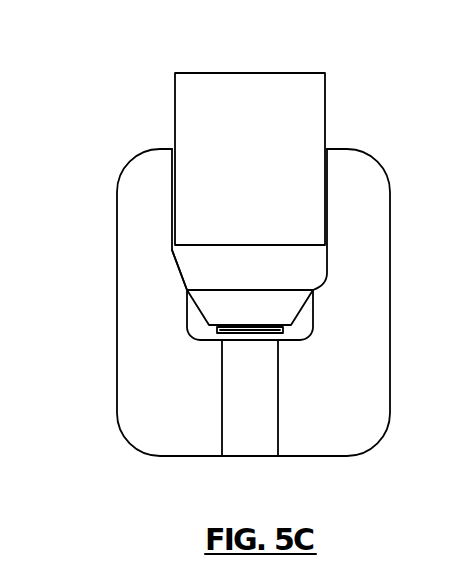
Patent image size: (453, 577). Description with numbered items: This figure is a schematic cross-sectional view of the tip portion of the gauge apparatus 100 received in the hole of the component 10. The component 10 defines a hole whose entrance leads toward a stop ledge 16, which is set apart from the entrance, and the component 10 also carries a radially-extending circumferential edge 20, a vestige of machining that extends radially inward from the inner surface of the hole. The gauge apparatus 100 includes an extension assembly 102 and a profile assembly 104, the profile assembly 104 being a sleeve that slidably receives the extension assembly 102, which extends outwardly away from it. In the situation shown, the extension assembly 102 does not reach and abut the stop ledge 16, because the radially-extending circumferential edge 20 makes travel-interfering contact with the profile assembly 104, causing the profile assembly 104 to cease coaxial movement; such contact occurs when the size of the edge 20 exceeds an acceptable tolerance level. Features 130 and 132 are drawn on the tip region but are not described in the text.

The gauge apparatus 100 is at (130, 103).
The component 10 is at (133, 182).
The profile assembly 104 is at (190, 128).
The radially-extending circumferential edge 20 is at (313, 290).
The tapered shoulder 130 is at (183, 274).
The nose portion 132 is at (197, 312).
The extension assembly 102 is at (232, 334).
The stop ledge 16 is at (278, 342).